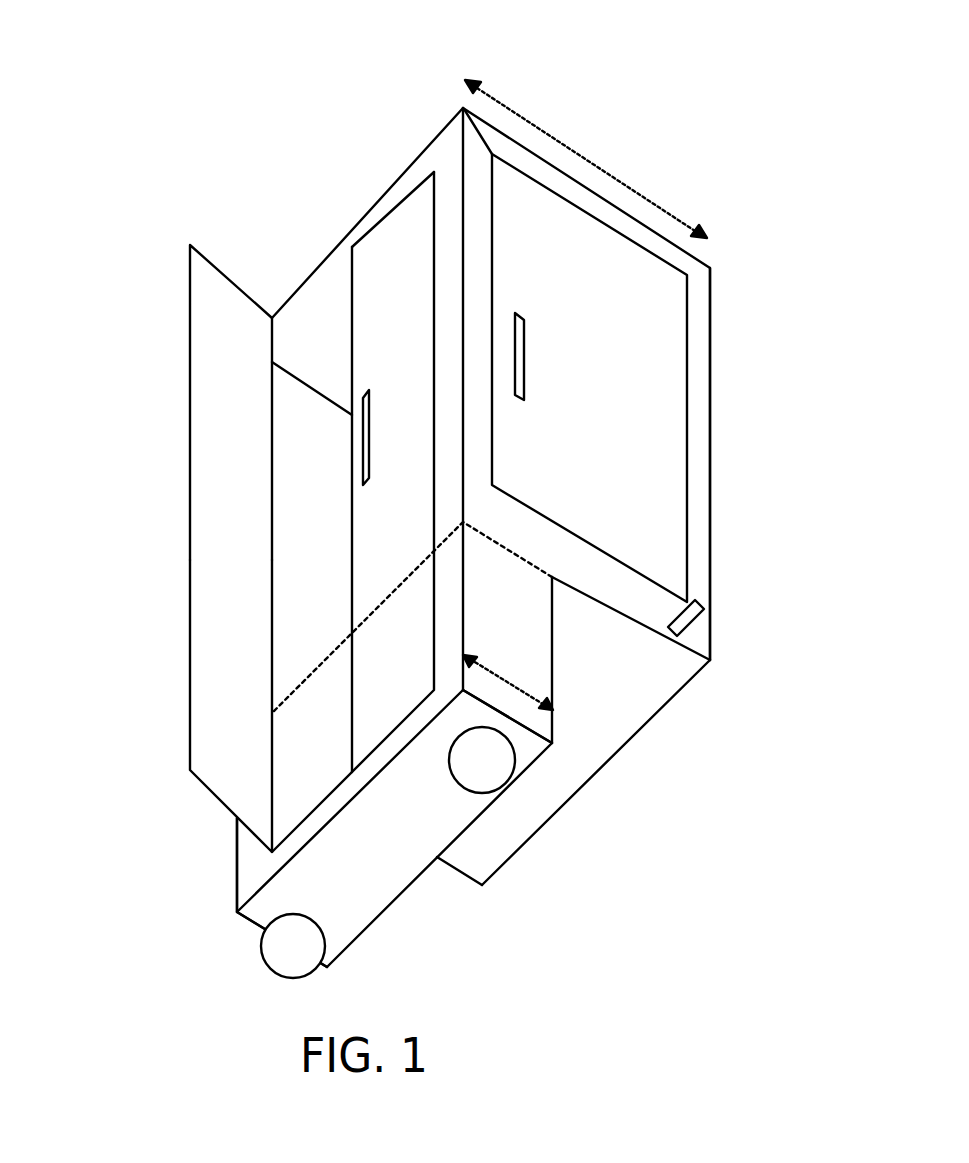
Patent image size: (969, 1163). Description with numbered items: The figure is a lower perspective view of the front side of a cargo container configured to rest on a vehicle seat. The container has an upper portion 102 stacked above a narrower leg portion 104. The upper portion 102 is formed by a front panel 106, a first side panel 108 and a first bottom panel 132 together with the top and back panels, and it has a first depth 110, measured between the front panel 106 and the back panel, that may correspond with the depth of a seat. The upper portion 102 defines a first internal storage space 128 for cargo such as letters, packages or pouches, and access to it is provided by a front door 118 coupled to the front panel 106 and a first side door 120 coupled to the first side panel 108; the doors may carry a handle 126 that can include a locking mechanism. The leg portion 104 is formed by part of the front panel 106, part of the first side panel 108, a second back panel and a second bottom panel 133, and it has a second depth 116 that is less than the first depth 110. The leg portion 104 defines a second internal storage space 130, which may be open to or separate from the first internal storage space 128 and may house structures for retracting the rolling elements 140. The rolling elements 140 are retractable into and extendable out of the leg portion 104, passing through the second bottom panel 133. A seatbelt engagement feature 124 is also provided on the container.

The upper portion 102 is at (732, 662).
The leg portion 104 is at (558, 585).
The front panel 106 is at (323, 260).
The first side panel 108 is at (480, 143).
The first depth 110 is at (592, 164).
The second depth 116 is at (520, 690).
The front door 118 is at (380, 325).
The first side door 120 is at (670, 308).
The seatbelt engagement feature 124 is at (685, 620).
The handle 126 is at (522, 362).
The first internal storage space 128 is at (333, 629).
The second internal storage space 130 is at (333, 750).
The first bottom panel 132 is at (603, 745).
The second bottom panel 133 is at (253, 926).
The rolling elements 140 is at (480, 793).